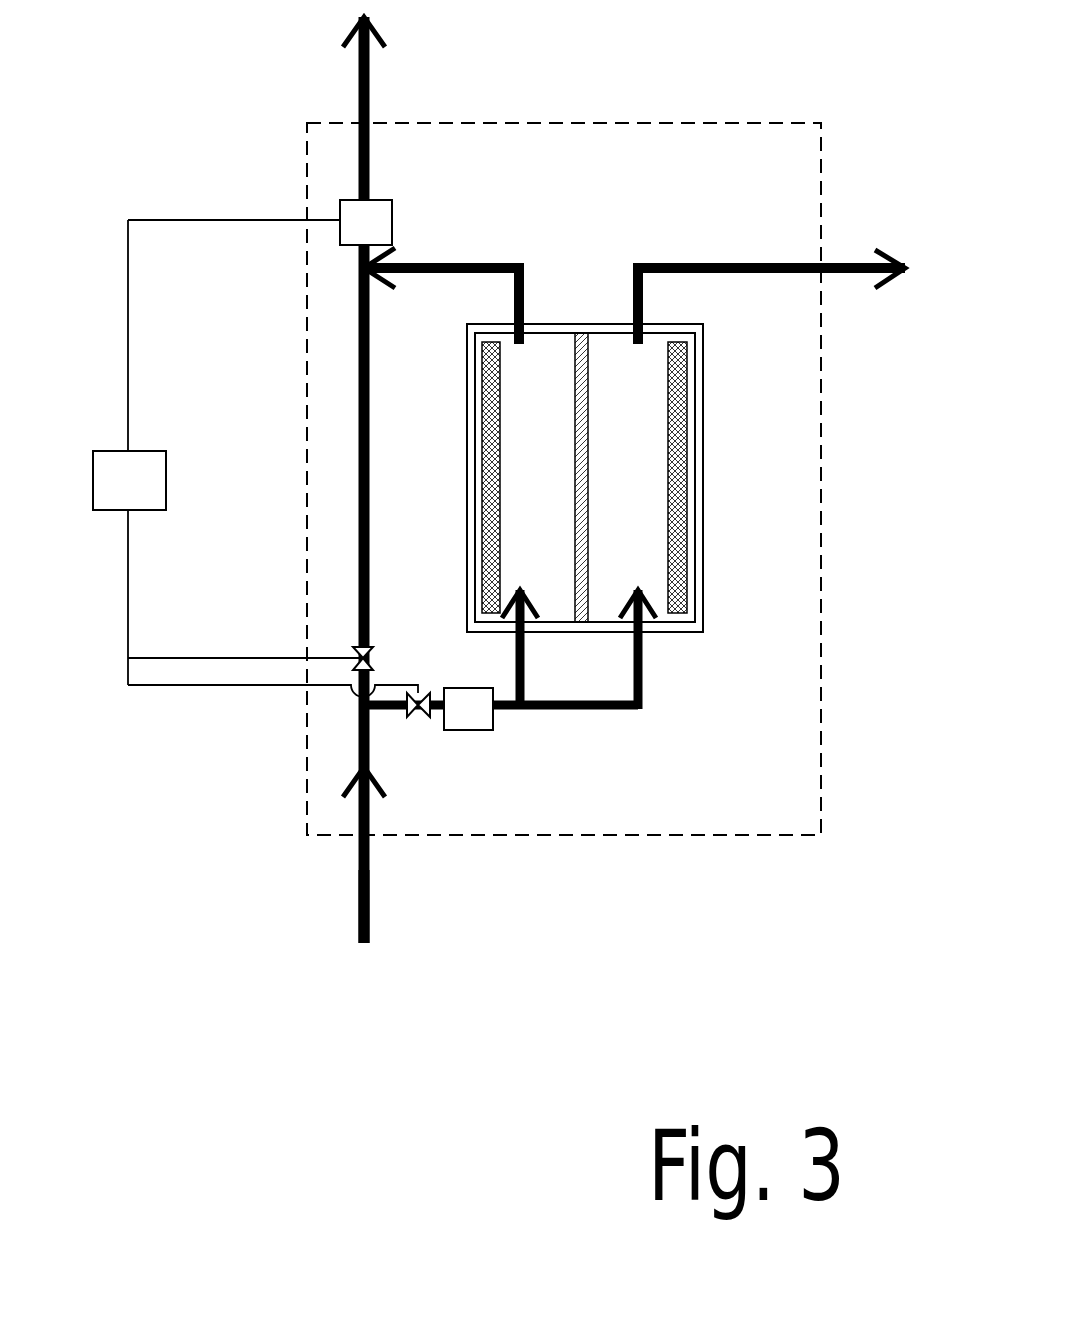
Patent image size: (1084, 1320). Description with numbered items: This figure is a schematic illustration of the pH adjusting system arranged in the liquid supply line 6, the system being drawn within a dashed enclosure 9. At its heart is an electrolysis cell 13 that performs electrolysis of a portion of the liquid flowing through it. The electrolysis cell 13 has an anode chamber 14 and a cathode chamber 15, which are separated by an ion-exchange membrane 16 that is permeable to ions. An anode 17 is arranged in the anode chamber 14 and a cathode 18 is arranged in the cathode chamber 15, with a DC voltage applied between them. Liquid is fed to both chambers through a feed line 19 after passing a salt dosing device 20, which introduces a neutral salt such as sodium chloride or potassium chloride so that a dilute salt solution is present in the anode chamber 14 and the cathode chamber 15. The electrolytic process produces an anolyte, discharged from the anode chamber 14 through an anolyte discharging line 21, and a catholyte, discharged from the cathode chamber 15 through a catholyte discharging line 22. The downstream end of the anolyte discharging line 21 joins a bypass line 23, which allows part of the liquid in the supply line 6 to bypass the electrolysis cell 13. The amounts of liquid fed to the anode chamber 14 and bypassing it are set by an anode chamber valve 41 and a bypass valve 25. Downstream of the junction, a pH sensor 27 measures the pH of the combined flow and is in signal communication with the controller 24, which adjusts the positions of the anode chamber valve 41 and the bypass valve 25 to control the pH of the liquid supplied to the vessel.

The liquid supply line 6 is at (360, 888).
The treatment unit 9 is at (604, 123).
The electrolysis cell 13 is at (676, 216).
The anode chamber 14 is at (537, 482).
The cathode chamber 15 is at (628, 482).
The membrane 16 is at (583, 343).
The anode 17 is at (485, 468).
The cathode 18 is at (680, 475).
The feed line 19 is at (515, 656).
The salt dosing device 20 is at (468, 709).
The anolyte discharging line 21 is at (460, 263).
The catholyte discharging line 22 is at (770, 263).
The bypass line 23 is at (358, 545).
The controller 24 is at (255, 458).
The bypass valve 25 is at (355, 648).
The pH sensor 27 is at (366, 222).
The anode chamber valve 41 is at (418, 717).